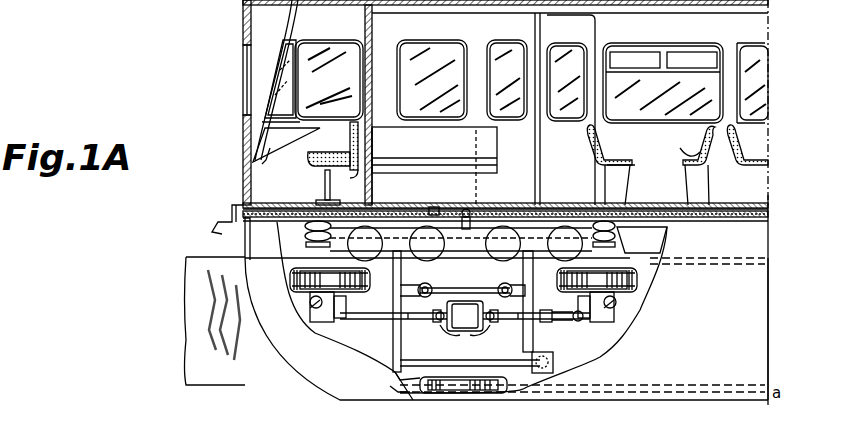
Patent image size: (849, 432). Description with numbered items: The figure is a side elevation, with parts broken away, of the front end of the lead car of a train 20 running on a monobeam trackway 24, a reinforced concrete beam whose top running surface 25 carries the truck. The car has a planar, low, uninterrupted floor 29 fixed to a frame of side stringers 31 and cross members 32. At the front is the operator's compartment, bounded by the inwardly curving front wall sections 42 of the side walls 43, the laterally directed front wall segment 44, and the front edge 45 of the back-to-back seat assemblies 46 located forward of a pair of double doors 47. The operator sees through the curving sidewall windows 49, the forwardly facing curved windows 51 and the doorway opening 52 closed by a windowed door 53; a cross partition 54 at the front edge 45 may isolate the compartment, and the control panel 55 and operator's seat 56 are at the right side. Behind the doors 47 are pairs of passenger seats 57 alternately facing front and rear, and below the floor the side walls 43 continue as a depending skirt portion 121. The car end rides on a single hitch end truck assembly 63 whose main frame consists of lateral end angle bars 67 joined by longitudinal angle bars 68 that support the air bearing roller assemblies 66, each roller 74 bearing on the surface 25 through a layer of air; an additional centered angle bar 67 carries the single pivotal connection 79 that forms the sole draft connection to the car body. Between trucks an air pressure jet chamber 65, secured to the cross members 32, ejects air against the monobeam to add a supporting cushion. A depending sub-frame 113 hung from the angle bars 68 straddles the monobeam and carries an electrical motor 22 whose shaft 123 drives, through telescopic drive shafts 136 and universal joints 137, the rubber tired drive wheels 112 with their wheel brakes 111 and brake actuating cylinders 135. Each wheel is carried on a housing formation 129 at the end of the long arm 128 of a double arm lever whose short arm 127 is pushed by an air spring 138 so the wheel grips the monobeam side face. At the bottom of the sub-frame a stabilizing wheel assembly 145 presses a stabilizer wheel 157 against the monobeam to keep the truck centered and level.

The train 20 is at (779, 204).
The electrical motor 22 is at (465, 316).
The monobeam trackway 24 is at (186, 302).
The top running surface 25 is at (195, 257).
The floor 29 is at (655, 210).
The side stringer 31 is at (768, 212).
The cross member 32 is at (626, 212).
The front wall section 42 is at (341, 22).
The side wall 43 is at (751, 23).
The front wall segment 44 is at (245, 32).
The front edge of seat assemblies 45 is at (372, 180).
The seat assemblies 46 is at (444, 153).
The double doors 47 is at (609, 38).
The sidewall window 49 is at (340, 78).
The curved window 51 is at (283, 50).
The doorway opening 52 is at (243, 70).
The door 53 is at (236, 135).
The cross partition 54 is at (490, 8).
The control panel 55 is at (274, 162).
The seat 56 is at (322, 170).
The seats 57 is at (630, 160).
The single hitch end truck assembly 63 is at (400, 215).
The air pressure jet chamber 65 is at (658, 244).
The air bearing roller assembly 66 is at (352, 205).
The end angle bar 67 is at (496, 212).
The longitudinal angle bar 68 is at (440, 212).
The roller 74 is at (385, 242).
The pivotal connection 79 is at (466, 210).
The wheel brake 111 is at (305, 297).
The drive wheel 112 is at (290, 279).
The sub-frame 113 is at (380, 354).
The skirt portion 121 is at (760, 348).
The motor shaft 123 is at (485, 331).
The short arm 127 is at (490, 280).
The long arm 128 is at (380, 317).
The housing formation 129 is at (318, 333).
The brake actuating cylinder 135 is at (312, 312).
The telescopic drive shaft 136 is at (413, 322).
The universal joint 137 is at (575, 322).
The air spring 138 is at (496, 290).
The stabilizing wheel assembly 145 is at (555, 378).
The stabilizer wheel 157 is at (390, 380).